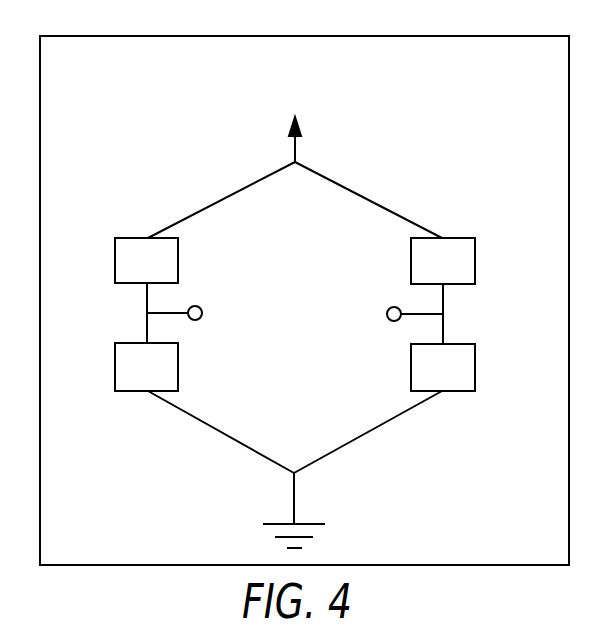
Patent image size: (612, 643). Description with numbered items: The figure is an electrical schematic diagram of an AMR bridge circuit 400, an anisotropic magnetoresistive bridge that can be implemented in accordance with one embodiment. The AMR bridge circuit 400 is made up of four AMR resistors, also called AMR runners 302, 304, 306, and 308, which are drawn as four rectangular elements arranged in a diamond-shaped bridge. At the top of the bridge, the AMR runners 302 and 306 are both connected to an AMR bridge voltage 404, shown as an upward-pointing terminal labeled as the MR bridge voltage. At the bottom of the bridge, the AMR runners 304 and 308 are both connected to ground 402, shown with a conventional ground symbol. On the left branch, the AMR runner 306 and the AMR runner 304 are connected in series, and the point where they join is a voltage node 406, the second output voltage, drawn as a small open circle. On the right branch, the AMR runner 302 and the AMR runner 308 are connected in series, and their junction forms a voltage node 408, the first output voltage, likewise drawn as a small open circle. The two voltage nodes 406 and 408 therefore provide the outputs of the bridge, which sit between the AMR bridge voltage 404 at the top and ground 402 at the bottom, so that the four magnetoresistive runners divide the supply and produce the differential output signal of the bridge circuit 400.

The AMR bridge circuit 400 is at (522, 530).
The ground 402 is at (324, 508).
The AMR bridge voltage 404 is at (326, 132).
The voltage node 406 is at (224, 293).
The voltage node 408 is at (378, 290).
The AMR runner 302 is at (468, 258).
The AMR runner 304 is at (172, 366).
The AMR runner 306 is at (172, 258).
The AMR runner 308 is at (468, 368).